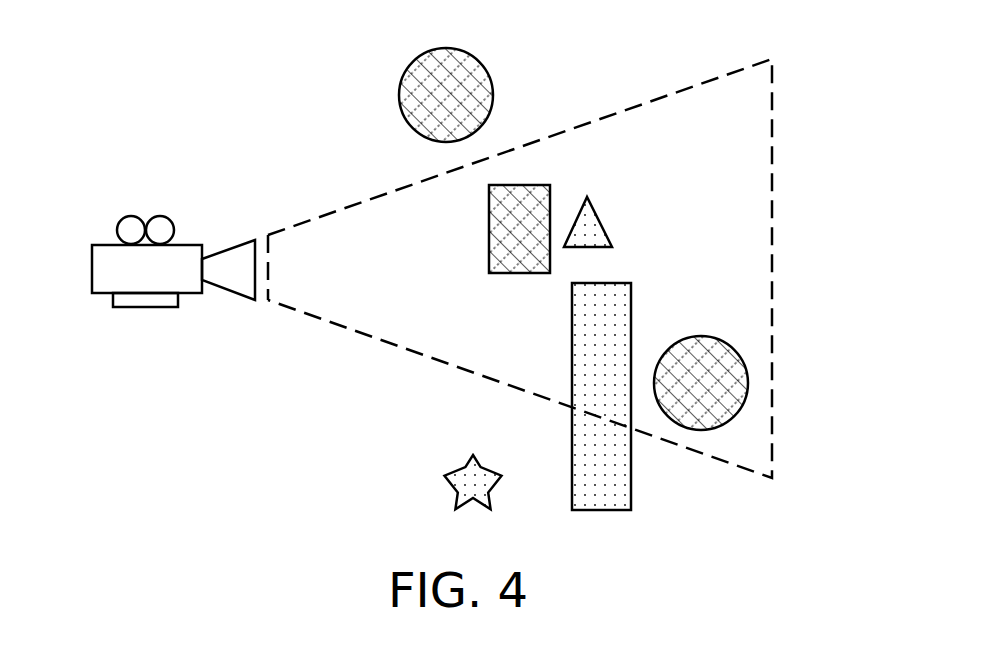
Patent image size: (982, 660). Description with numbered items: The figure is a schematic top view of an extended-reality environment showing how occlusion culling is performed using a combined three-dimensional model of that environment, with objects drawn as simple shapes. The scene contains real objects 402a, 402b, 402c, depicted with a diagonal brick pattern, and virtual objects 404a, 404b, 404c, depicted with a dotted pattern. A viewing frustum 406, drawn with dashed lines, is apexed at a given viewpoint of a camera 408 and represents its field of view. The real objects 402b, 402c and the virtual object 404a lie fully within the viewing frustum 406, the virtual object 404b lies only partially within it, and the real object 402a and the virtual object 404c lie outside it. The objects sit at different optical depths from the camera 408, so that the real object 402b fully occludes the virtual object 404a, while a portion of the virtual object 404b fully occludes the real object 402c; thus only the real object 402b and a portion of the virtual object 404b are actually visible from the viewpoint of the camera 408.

The real object 402a is at (486, 93).
The real object 402b is at (494, 316).
The real object 402c is at (757, 383).
The virtual object 404a is at (611, 147).
The virtual object 404b is at (649, 396).
The virtual object 404c is at (432, 482).
The viewing frustum 406 is at (520, 268).
The camera 408 is at (106, 212).